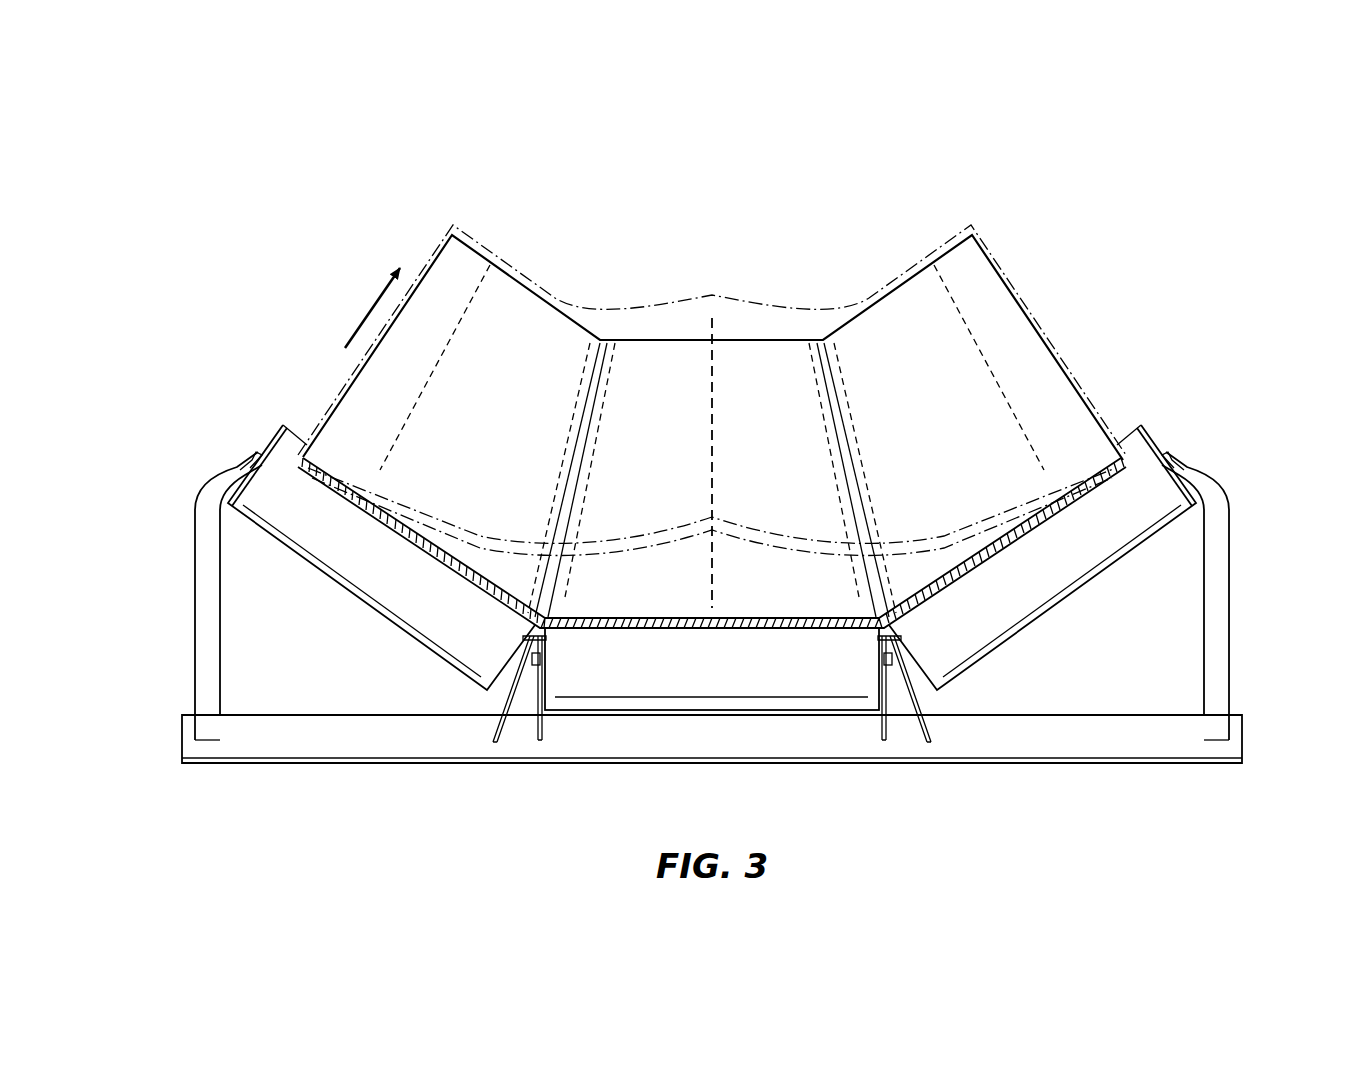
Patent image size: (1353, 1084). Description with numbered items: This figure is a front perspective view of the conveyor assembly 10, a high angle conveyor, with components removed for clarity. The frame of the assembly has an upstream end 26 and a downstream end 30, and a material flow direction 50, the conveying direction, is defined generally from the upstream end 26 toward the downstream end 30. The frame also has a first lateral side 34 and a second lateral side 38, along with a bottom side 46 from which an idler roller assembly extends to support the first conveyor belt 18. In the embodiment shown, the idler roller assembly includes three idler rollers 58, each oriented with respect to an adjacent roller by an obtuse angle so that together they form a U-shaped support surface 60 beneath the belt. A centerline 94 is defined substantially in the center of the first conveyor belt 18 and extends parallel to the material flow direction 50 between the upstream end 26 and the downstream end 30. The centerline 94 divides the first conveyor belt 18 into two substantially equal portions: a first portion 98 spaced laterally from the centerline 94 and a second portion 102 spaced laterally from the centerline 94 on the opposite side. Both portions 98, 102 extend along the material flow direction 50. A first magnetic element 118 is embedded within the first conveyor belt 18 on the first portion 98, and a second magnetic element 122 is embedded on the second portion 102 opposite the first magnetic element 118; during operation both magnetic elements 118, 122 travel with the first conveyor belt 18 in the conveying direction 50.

The conveyor assembly 10 is at (540, 183).
The first conveyor belt 18 is at (872, 632).
The upstream end 26 is at (570, 810).
The downstream end 30 is at (773, 267).
The first lateral side 34 is at (170, 618).
The second lateral side 38 is at (1252, 620).
The bottom side 46 is at (1033, 778).
The material flow direction 50 is at (377, 300).
The idler roller 58 is at (368, 570).
The U-shaped support surface 60 is at (590, 647).
The centerline 94 is at (707, 413).
The first portion 98 is at (505, 422).
The second portion 102 is at (951, 421).
The first magnetic element 118 is at (308, 478).
The second magnetic element 122 is at (1117, 477).